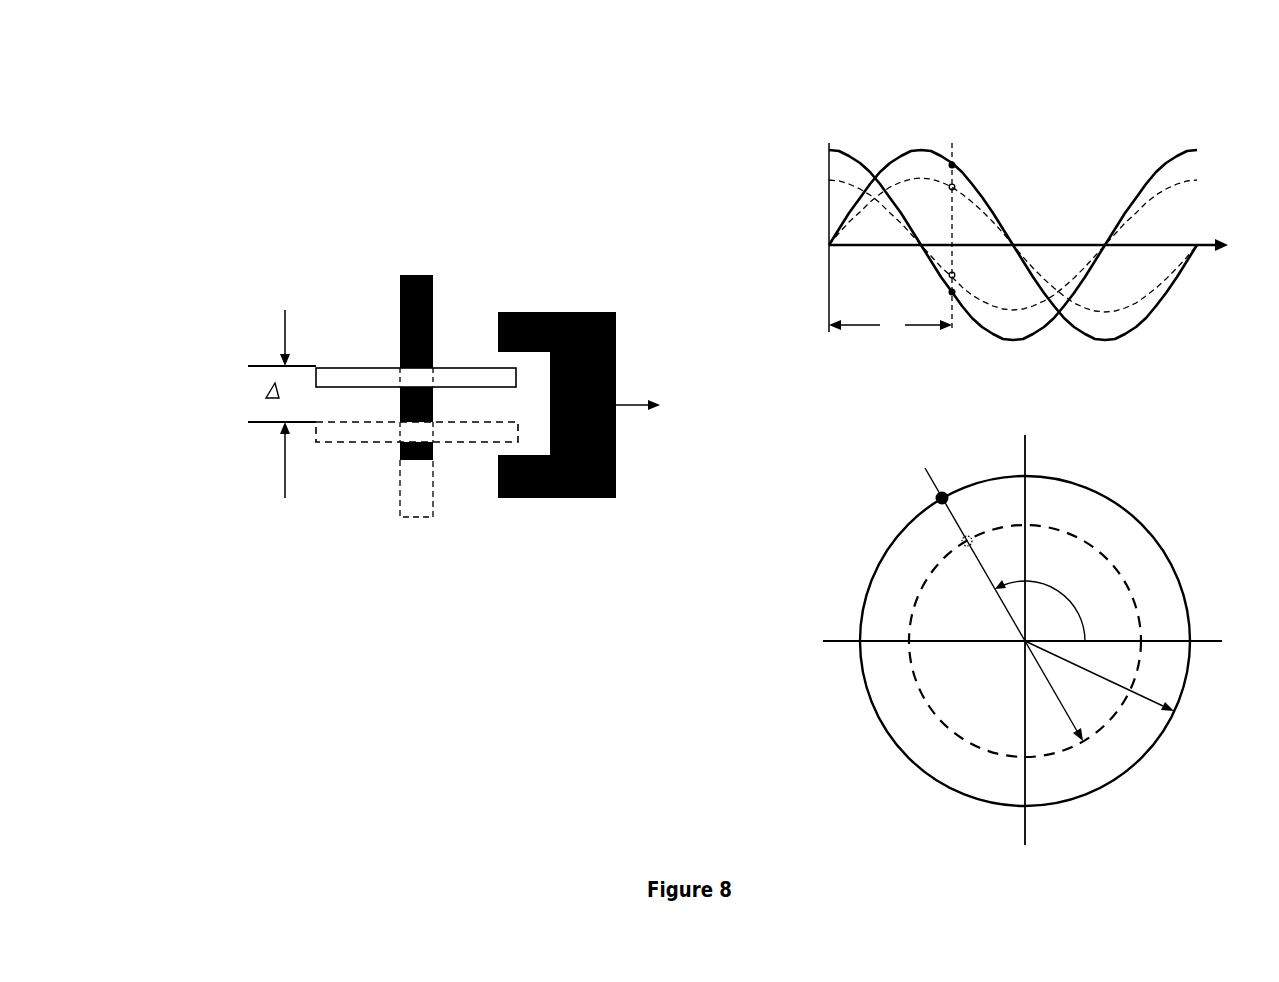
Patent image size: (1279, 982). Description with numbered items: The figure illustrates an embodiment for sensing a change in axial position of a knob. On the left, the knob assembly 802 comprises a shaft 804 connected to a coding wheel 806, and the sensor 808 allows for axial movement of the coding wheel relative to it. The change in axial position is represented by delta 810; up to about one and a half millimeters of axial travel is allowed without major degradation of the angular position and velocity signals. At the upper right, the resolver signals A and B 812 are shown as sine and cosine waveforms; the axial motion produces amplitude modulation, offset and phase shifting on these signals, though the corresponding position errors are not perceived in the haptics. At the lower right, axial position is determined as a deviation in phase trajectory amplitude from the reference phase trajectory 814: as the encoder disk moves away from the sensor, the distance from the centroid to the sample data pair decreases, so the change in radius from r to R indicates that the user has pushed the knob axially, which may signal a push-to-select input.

The knob assembly 802 is at (390, 145).
The shaft 804 is at (418, 273).
The coding wheel 806 is at (373, 367).
The sensor 808 is at (578, 311).
The change in position delta 810 is at (252, 389).
The resolver signals A and B 812 is at (868, 79).
The reference phase trajectory 814 is at (820, 521).